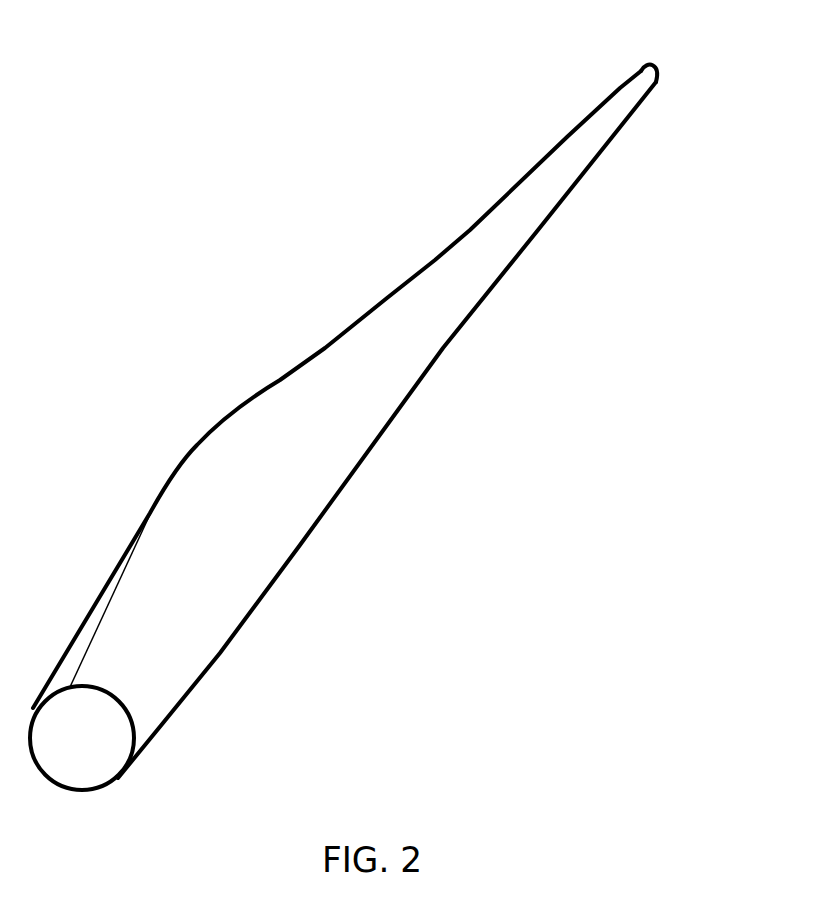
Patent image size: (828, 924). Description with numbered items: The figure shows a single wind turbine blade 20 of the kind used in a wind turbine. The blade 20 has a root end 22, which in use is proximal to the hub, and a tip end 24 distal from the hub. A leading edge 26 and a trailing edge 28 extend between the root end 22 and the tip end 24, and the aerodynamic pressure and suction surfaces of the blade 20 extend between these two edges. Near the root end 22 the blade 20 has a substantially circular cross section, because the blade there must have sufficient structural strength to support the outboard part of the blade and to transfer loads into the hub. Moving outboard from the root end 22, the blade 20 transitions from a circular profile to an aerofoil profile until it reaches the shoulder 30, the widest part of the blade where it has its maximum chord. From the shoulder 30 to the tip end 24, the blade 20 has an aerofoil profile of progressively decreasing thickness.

The wind turbine blade 20 is at (373, 427).
The root end 22 is at (140, 743).
The tip end 24 is at (640, 83).
The leading edge 26 is at (533, 260).
The trailing edge 28 is at (388, 298).
The shoulder 30 is at (192, 445).